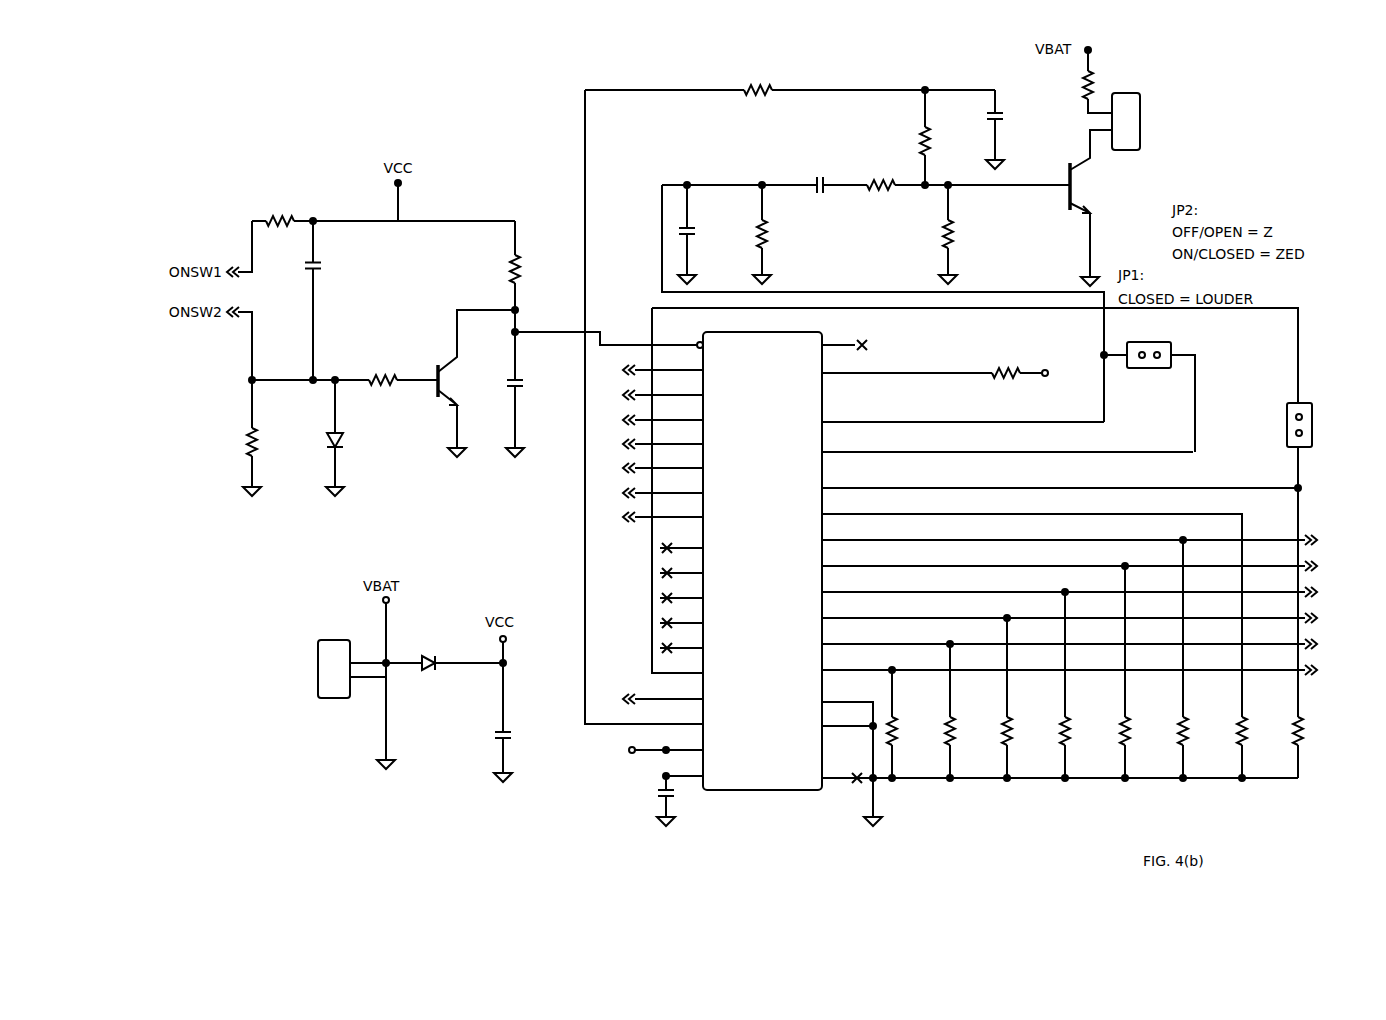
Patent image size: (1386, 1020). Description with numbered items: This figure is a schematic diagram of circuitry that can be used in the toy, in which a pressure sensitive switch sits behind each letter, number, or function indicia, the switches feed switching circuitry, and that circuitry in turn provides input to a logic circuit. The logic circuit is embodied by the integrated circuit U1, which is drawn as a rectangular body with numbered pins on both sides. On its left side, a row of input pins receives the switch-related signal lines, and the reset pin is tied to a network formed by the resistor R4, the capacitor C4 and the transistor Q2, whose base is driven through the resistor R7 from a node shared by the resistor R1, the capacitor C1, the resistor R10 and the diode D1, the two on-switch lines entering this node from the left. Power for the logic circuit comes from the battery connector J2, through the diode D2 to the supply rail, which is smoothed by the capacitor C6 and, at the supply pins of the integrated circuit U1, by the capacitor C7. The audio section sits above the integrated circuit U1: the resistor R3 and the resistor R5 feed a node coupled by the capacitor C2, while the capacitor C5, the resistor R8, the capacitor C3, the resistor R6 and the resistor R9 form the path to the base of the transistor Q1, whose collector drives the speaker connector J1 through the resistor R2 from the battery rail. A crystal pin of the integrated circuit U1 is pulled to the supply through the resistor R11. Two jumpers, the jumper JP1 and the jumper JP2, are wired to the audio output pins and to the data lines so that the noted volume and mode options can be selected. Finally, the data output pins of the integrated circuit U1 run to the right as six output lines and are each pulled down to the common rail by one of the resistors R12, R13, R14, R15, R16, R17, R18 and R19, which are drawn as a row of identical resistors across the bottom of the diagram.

The resistor 1K R1 is at (280, 221).
The resistor 4.7 R2 is at (1083, 81).
The resistor 4.7K R3 is at (758, 94).
The resistor 10K R4 is at (531, 300).
The resistor 4.7K R5 is at (944, 137).
The resistor 270 R6 is at (881, 190).
The resistor 220K R7 is at (383, 381).
The resistor 1K R8 is at (772, 234).
The resistor 10K R9 is at (962, 234).
The resistor 100K R10 is at (271, 461).
The resistor 62K R11 is at (1006, 377).
The pull-down resistor 100K R12 is at (912, 724).
The pull-down resistor 100K R13 is at (970, 711).
The pull-down resistor 100K R14 is at (1027, 698).
The pull-down resistor 100K R15 is at (1085, 685).
The pull-down resistor 100K R16 is at (1145, 672).
The pull-down resistor 100K R17 is at (1203, 659).
The pull-down resistor 100K R18 is at (1262, 747).
The pull-down resistor 100K R19 is at (1318, 733).
The capacitor 0.1uF C1 is at (338, 300).
The capacitor 1uF C2 is at (1011, 129).
The capacitor 1uF C3 is at (814, 190).
The capacitor 0.47uF C4 is at (538, 415).
The capacitor 0.1uF C5 is at (707, 234).
The capacitor 100uF C6 is at (525, 712).
The capacitor 0.1uF C7 is at (639, 801).
The diode 1N4148 D1 is at (366, 438).
The diode 1N4148 D2 is at (426, 662).
The transistor 8050 Q1 is at (1090, 208).
The transistor 9014 Q2 is at (467, 383).
The SPC500A speech controller IC U1 is at (967, 569).
The speaker connector CON2 J1 is at (1177, 126).
The battery connector CON2 J2 is at (283, 670).
The jumper JP1 is at (1148, 386).
The jumper JP2 is at (1259, 425).